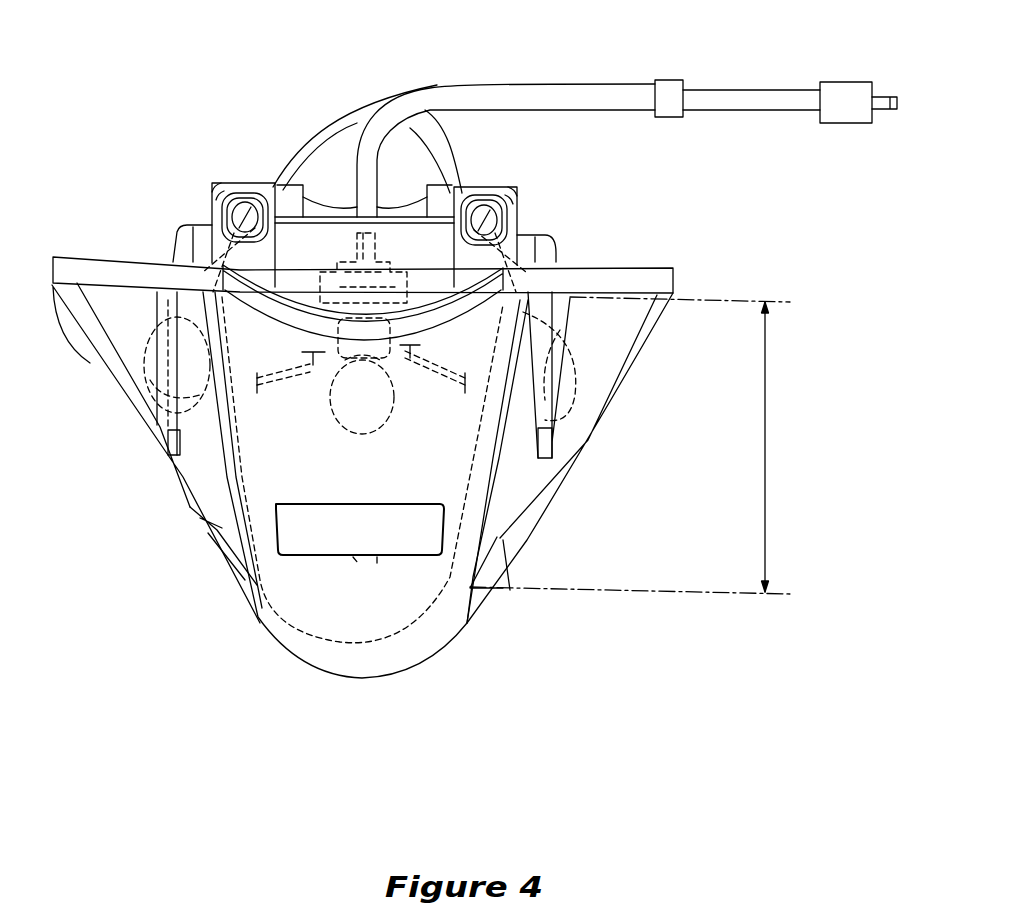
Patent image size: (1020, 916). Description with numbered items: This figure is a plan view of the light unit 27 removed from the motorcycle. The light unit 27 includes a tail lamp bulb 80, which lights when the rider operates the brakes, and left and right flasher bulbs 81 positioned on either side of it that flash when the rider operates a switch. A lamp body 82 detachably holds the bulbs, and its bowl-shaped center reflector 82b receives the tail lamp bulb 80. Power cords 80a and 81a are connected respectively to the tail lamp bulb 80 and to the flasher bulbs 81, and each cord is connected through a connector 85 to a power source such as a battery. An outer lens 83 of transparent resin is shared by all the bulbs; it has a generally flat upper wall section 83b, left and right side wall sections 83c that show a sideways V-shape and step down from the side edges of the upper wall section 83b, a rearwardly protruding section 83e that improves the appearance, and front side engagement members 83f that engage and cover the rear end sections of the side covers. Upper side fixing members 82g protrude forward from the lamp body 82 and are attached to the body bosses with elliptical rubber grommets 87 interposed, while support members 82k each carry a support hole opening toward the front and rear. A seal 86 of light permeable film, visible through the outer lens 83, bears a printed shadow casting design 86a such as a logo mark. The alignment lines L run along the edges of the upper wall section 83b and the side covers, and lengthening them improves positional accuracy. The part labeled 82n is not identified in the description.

The light unit 27 is at (194, 634).
The tail lamp bulb 80 is at (400, 393).
The power cord 80a is at (357, 128).
The flasher bulb 81 is at (135, 393).
The power cord 81a is at (317, 132).
The lamp body 82 is at (182, 221).
The center reflector 82b is at (297, 378).
The upper side fixing member 82g is at (260, 190).
The support member 82k is at (313, 220).
The notch 82n is at (227, 182).
The outer lens 83 is at (600, 448).
The upper wall section 83b is at (400, 583).
The side wall section 83c is at (103, 330).
The rearwardly protruding section 83e is at (222, 563).
The front side engagement member 83f is at (163, 433).
The connector 85 is at (840, 81).
The seal 86 is at (353, 563).
The shadow casting design 86a is at (377, 563).
The rubber grommet 87 is at (243, 190).
The alignment line L is at (765, 475).